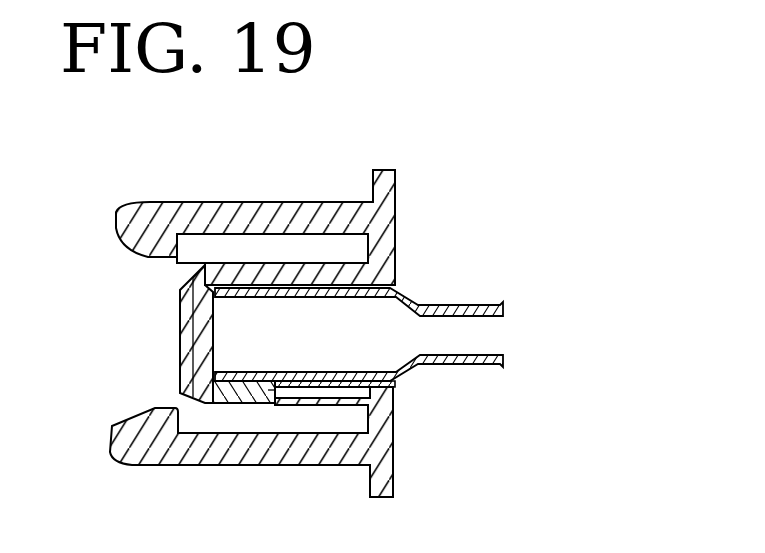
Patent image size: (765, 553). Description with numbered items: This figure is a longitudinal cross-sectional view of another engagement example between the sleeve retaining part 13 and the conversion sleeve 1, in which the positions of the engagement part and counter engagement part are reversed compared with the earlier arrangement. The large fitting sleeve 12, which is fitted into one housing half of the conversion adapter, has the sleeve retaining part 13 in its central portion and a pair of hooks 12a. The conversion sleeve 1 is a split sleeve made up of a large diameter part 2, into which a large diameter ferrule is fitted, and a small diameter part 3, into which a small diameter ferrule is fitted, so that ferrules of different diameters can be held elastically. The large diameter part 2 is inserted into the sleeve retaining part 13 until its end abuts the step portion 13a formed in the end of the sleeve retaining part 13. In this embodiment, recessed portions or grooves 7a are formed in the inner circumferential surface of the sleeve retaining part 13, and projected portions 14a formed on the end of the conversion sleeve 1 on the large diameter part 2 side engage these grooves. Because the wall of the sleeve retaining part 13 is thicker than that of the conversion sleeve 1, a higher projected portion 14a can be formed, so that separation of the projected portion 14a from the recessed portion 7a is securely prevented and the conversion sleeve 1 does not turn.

The conversion sleeve 1 is at (432, 302).
The large diameter part 2 is at (320, 372).
The small diameter part 3 is at (500, 357).
The recessed portion 7a is at (397, 383).
The large fitting sleeve 12 is at (342, 466).
The hooks 12a is at (148, 256).
The sleeve retaining part 13 is at (237, 263).
The step portion 13a is at (218, 318).
The projected portion 14a is at (243, 405).